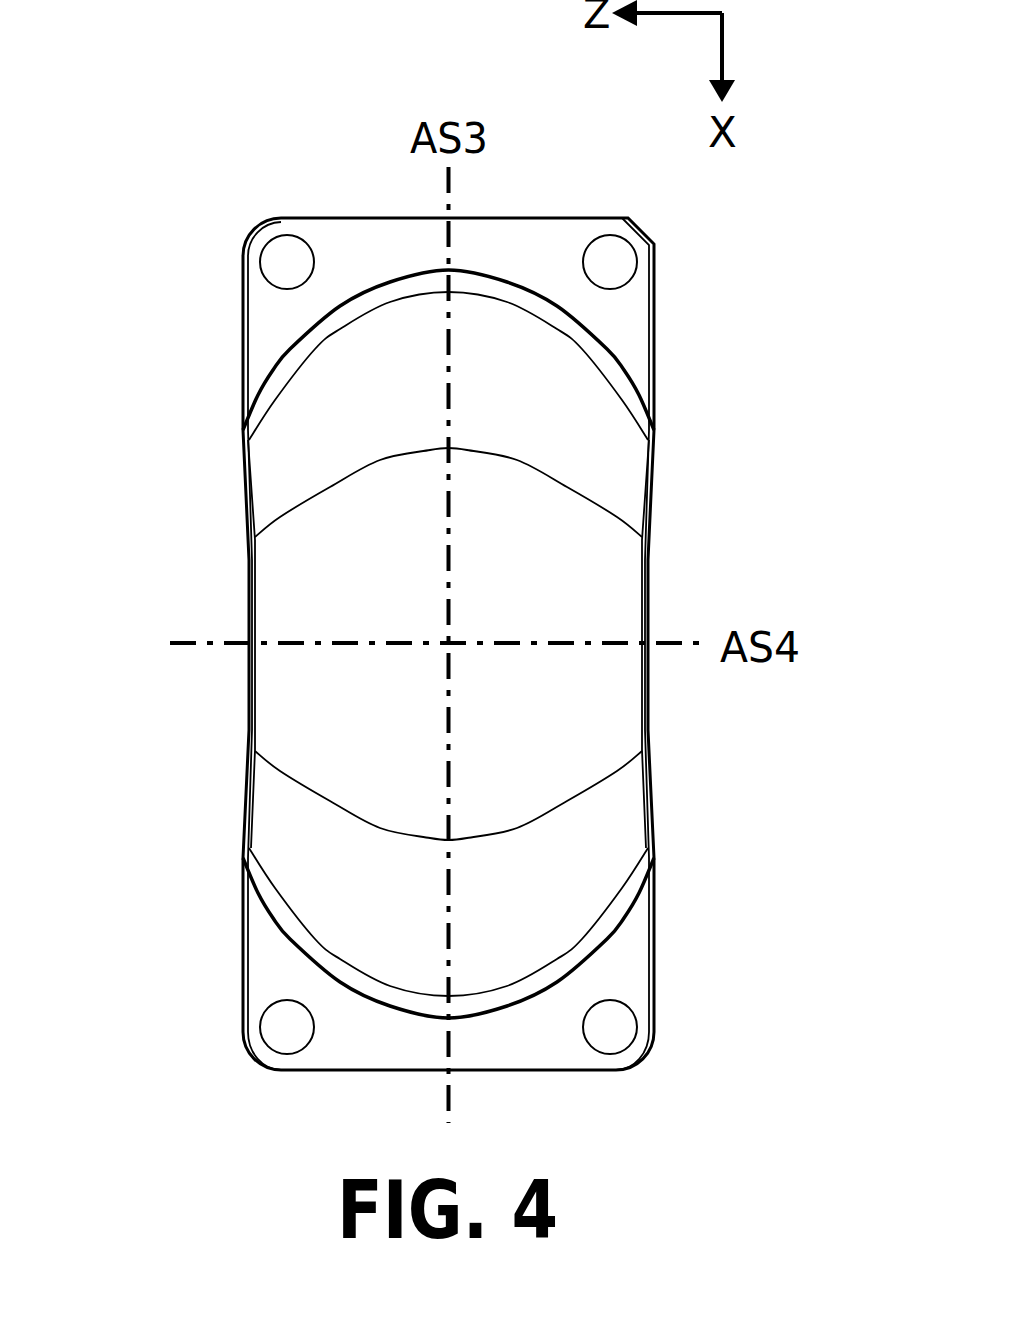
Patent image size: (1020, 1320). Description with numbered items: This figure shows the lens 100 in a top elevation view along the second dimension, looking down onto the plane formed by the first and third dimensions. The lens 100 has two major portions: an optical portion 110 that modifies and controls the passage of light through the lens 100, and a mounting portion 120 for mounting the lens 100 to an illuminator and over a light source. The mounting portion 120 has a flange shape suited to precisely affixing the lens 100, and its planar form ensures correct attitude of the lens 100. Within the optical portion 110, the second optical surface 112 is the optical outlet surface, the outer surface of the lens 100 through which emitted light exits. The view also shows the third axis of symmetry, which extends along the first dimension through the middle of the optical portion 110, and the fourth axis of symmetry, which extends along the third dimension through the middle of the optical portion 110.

The lens 100 is at (214, 213).
The optical portion 110 is at (272, 470).
The second optical surface 112 is at (306, 819).
The mounting portion 120 is at (635, 965).